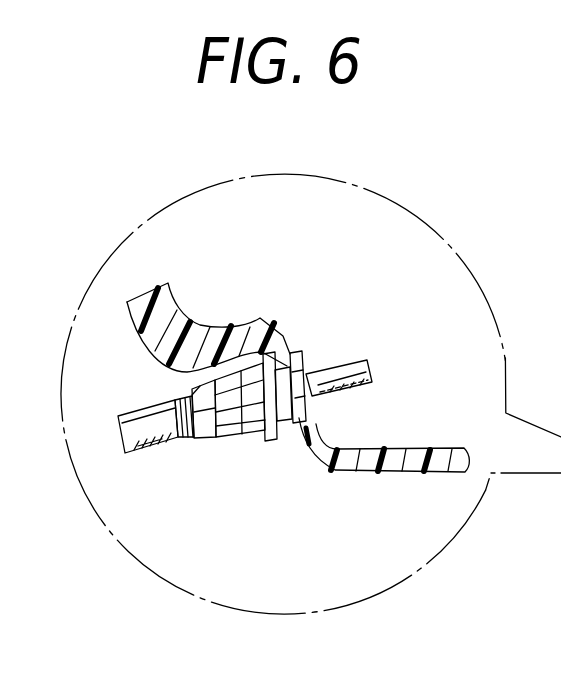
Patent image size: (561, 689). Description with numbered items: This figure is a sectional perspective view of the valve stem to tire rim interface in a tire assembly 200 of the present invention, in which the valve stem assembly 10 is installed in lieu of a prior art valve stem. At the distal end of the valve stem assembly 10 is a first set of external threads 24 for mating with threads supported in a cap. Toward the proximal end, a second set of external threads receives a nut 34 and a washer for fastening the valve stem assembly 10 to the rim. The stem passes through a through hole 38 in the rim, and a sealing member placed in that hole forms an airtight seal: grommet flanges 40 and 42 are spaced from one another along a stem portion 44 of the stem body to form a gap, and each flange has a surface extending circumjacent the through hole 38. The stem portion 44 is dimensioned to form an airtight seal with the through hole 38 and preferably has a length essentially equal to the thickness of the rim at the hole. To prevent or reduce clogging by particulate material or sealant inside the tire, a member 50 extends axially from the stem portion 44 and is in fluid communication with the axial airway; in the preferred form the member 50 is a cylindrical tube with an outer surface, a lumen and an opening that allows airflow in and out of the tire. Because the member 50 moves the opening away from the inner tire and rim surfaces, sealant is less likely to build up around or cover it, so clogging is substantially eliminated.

The tire assembly 200 is at (223, 177).
The valve stem assembly 10 is at (182, 385).
The first set of external threads 24 is at (153, 454).
The nut 34 is at (258, 443).
The through hole 38 is at (306, 428).
The grommet flange 40 is at (230, 326).
The grommet flange 42 is at (316, 407).
The stem portion 44 is at (286, 345).
The member 50 is at (340, 354).